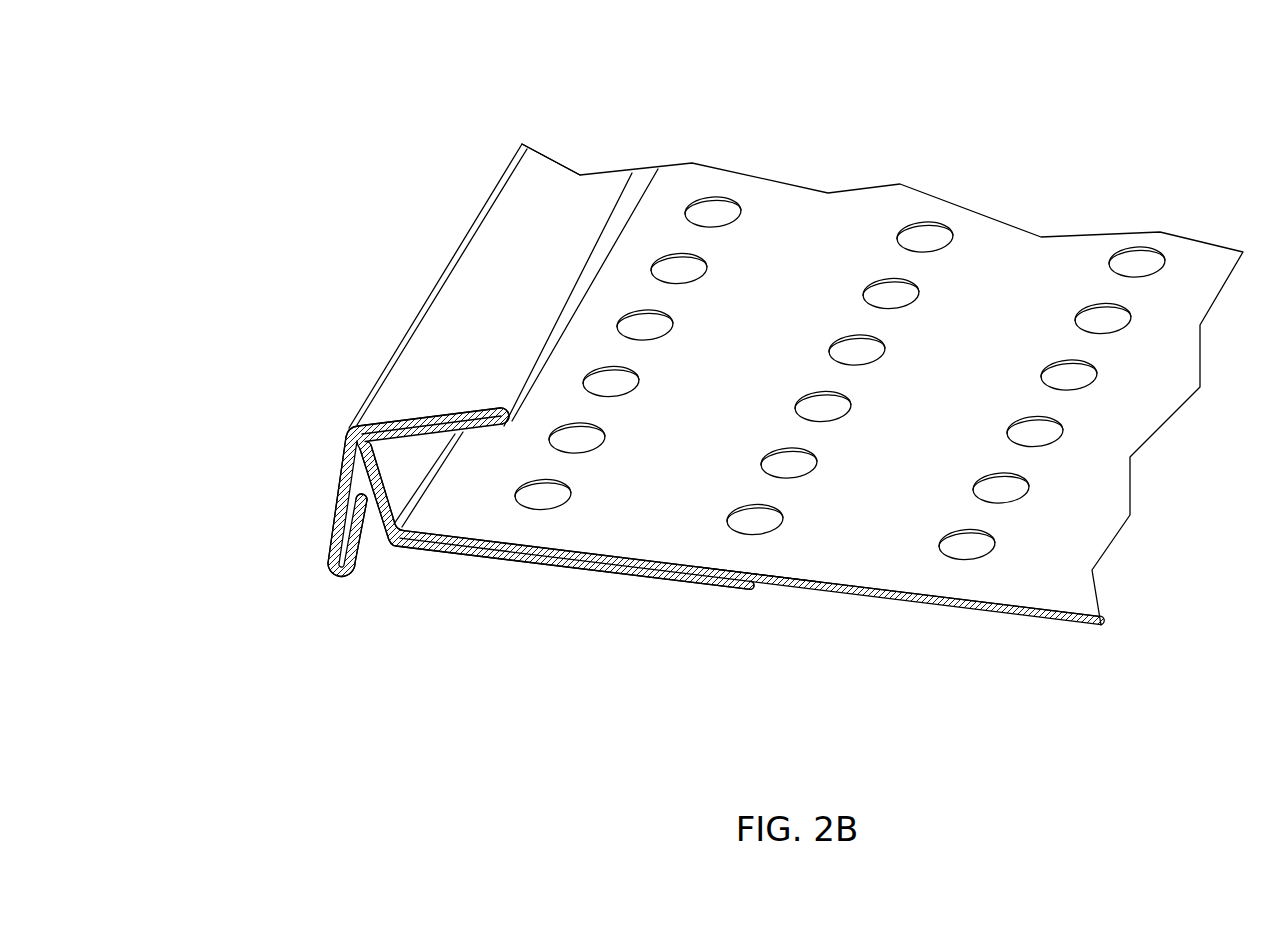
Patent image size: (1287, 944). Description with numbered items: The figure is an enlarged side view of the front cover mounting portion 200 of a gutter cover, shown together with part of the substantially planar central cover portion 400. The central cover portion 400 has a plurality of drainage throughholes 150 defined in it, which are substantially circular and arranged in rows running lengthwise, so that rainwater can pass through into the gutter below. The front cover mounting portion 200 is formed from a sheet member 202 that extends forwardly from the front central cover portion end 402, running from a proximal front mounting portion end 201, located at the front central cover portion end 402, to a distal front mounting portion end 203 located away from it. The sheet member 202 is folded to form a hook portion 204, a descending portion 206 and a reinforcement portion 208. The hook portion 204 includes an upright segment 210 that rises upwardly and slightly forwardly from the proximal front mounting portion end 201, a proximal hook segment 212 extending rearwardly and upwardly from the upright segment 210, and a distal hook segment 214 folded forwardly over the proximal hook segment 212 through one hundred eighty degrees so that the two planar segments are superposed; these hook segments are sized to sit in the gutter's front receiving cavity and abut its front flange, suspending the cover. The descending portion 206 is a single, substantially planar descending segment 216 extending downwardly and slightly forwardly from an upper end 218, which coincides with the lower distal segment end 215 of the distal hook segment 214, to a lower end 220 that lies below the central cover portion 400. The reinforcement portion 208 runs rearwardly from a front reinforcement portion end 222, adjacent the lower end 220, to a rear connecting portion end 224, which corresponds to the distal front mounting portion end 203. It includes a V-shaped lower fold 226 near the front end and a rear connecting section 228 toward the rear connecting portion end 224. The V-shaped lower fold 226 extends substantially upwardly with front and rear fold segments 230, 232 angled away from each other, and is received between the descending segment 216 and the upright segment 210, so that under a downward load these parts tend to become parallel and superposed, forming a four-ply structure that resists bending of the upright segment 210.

The front cover mounting portion 200 is at (733, 380).
The sheet member 202 is at (477, 258).
The hook portion 204 is at (450, 327).
The drainage throughholes 150 is at (1135, 266).
The distal hook segment 214 is at (462, 385).
The proximal hook segment 212 is at (481, 431).
The lower distal segment end 215 is at (353, 423).
The upper end 218 is at (349, 431).
The descending segment 216 is at (346, 472).
The descending portion 206 is at (663, 499).
The lower end 220 is at (334, 574).
The front reinforcement portion end 222 is at (345, 572).
The front fold segment 230 is at (361, 566).
The upright segment 210 is at (818, 370).
The front central cover portion end 402 is at (405, 515).
The reinforcement portion 208 is at (419, 573).
The rear fold segment 232 is at (392, 546).
The V-shaped lower fold 226 is at (379, 553).
The proximal front mounting portion end 201 is at (427, 548).
The rear connecting section 228 is at (747, 617).
The distal front mounting portion end 203 is at (749, 587).
The rear connecting portion end 224 is at (757, 582).
The central cover portion 400 is at (1017, 624).